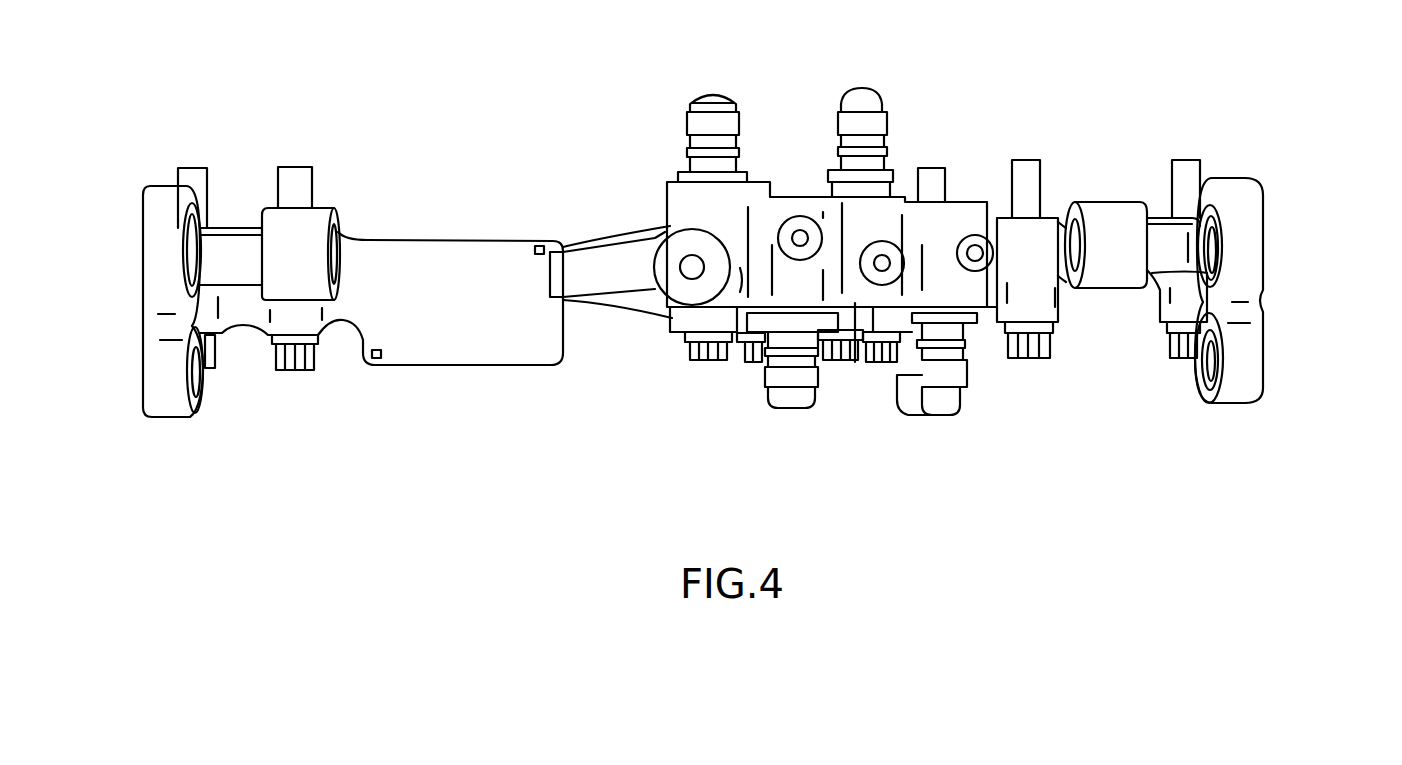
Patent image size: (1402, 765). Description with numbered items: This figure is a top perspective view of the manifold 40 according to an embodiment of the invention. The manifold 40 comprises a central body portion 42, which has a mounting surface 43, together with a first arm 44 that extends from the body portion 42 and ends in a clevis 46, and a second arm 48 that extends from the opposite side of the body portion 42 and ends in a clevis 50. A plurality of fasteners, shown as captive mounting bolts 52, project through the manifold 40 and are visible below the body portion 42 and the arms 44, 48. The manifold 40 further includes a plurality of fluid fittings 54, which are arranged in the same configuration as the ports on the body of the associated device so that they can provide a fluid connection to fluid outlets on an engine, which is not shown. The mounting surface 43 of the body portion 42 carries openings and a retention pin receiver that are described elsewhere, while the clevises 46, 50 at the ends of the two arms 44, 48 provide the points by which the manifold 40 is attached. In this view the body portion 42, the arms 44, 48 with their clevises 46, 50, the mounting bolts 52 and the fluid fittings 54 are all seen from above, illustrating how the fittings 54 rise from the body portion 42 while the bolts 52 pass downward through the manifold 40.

The manifold 40 is at (1166, 140).
The body portion 42 is at (972, 200).
The mounting surface 43 is at (855, 364).
The first arm 44 is at (597, 300).
The clevis 46 is at (130, 339).
The second arm 48 is at (1148, 293).
The clevis 50 is at (1278, 238).
The captive mounting bolts 52 is at (702, 358).
The fluid fittings 54 is at (703, 117).